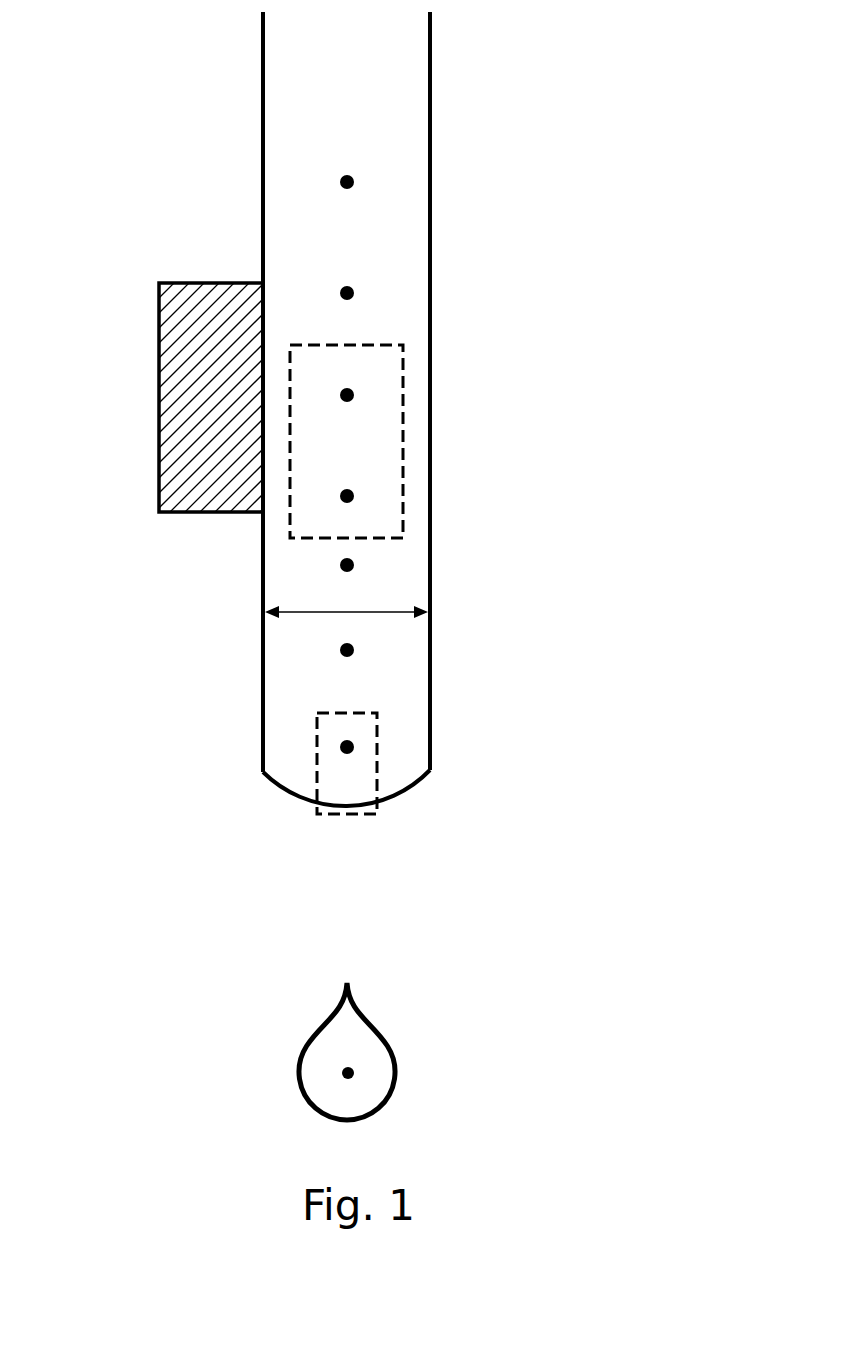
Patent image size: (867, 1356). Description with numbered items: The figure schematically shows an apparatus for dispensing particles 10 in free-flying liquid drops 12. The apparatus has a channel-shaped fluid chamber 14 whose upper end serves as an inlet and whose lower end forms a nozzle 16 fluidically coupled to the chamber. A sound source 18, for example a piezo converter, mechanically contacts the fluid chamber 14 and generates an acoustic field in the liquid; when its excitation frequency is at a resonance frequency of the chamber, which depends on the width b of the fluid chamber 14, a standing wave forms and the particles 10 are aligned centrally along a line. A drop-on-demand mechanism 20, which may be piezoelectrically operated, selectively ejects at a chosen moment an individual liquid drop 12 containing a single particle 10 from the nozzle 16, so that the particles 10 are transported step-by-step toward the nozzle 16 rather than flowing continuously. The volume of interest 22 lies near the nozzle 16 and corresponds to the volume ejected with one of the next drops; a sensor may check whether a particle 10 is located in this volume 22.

The particles 10 is at (347, 174).
The free-flying liquid drop 12 is at (367, 1028).
The fluid chamber 14 is at (263, 112).
The nozzle 16 is at (430, 771).
The sound source 18 is at (160, 397).
The drop-on-demand mechanism 20 is at (403, 390).
The volume of interest 22 is at (316, 804).
The width of the fluid chamber b is at (378, 612).